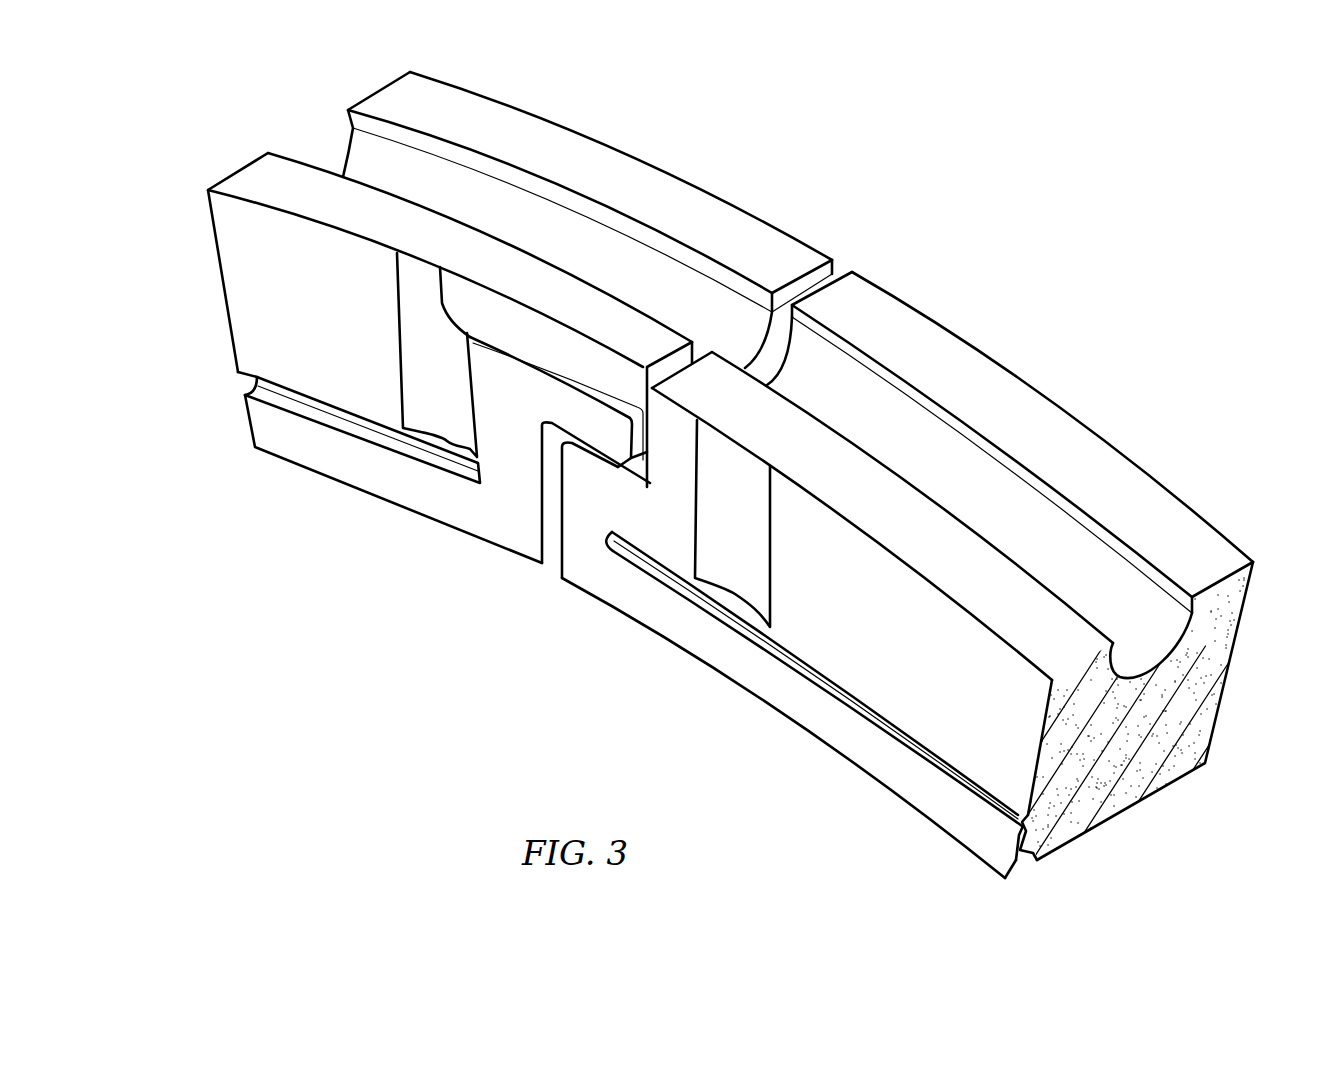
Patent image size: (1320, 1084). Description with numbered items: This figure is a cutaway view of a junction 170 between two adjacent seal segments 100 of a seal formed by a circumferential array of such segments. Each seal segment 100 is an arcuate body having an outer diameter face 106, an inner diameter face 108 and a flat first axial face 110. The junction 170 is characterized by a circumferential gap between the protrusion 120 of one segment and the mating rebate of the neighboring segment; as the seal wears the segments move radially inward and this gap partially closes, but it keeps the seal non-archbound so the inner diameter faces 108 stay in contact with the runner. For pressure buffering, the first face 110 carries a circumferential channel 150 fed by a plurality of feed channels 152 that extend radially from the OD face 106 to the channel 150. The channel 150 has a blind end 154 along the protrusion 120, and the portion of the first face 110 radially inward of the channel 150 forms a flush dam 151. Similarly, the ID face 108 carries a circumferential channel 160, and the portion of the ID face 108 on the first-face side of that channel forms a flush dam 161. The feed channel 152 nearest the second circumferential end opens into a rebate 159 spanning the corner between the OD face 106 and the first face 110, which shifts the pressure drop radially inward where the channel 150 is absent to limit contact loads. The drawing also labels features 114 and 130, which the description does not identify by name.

The seal segment 100 is at (695, 143).
The outer diameter (OD) face 106 is at (525, 140).
The inner diameter (ID) face 108 is at (1125, 815).
The first axial face 110 is at (287, 285).
The groove 114 is at (1107, 581).
The protrusion 120 is at (592, 568).
The lap joint 130 is at (550, 551).
The circumferential channel 150 is at (336, 409).
The dam 151 is at (983, 842).
The feed channels 152 is at (433, 393).
The blind end 154 is at (613, 548).
The rebate 159 is at (528, 328).
The circumferential channel 160 is at (1027, 866).
The dam 161 is at (1010, 878).
The junction 170 is at (846, 259).